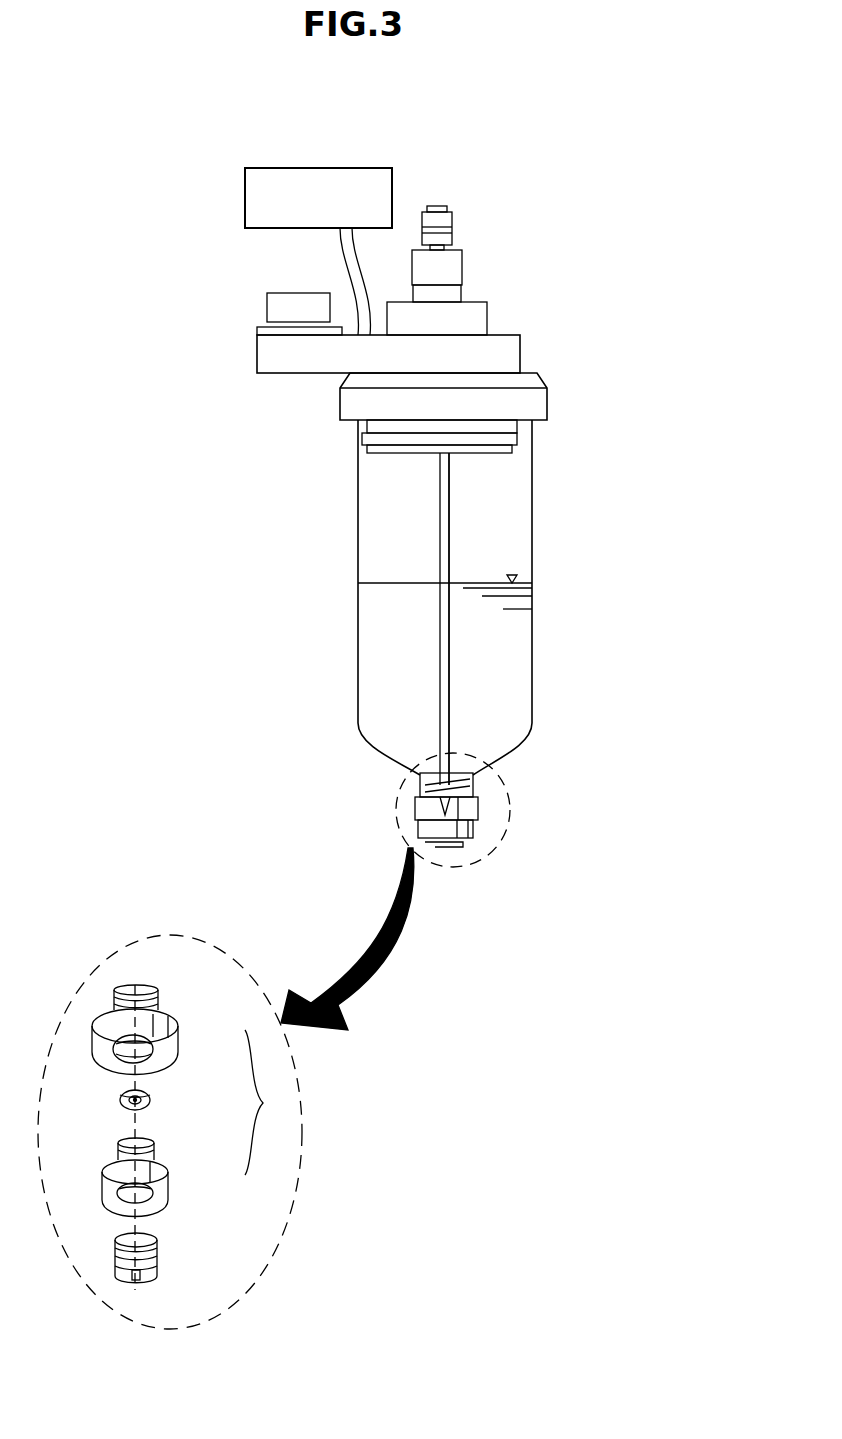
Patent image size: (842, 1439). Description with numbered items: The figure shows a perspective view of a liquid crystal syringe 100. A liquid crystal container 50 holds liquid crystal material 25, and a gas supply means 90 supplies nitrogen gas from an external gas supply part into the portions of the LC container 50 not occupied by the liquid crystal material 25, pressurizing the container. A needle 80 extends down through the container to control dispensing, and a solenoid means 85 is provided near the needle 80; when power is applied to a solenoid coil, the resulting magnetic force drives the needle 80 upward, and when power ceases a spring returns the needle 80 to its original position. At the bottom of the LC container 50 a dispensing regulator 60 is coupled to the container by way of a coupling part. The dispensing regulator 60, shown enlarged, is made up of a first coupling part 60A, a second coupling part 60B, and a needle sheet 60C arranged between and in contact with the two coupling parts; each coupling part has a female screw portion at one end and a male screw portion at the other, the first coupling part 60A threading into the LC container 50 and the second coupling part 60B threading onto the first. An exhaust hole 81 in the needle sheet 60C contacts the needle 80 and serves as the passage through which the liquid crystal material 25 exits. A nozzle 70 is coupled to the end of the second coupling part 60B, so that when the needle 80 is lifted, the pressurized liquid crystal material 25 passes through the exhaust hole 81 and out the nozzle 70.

The syringe 100 is at (588, 366).
The gas supply means 90 is at (320, 170).
The solenoid means 85 is at (460, 258).
The needle 80 is at (443, 548).
The liquid crystal material 25 is at (377, 645).
The liquid crystal container 50 is at (533, 645).
The dispensing regulator 60 is at (172, 1101).
The first coupling part 60A is at (177, 1033).
The second coupling part 60B is at (168, 1178).
The needle sheet 60C is at (150, 1096).
The exhaust hole 81 is at (120, 1097).
The nozzle 70 is at (158, 1248).